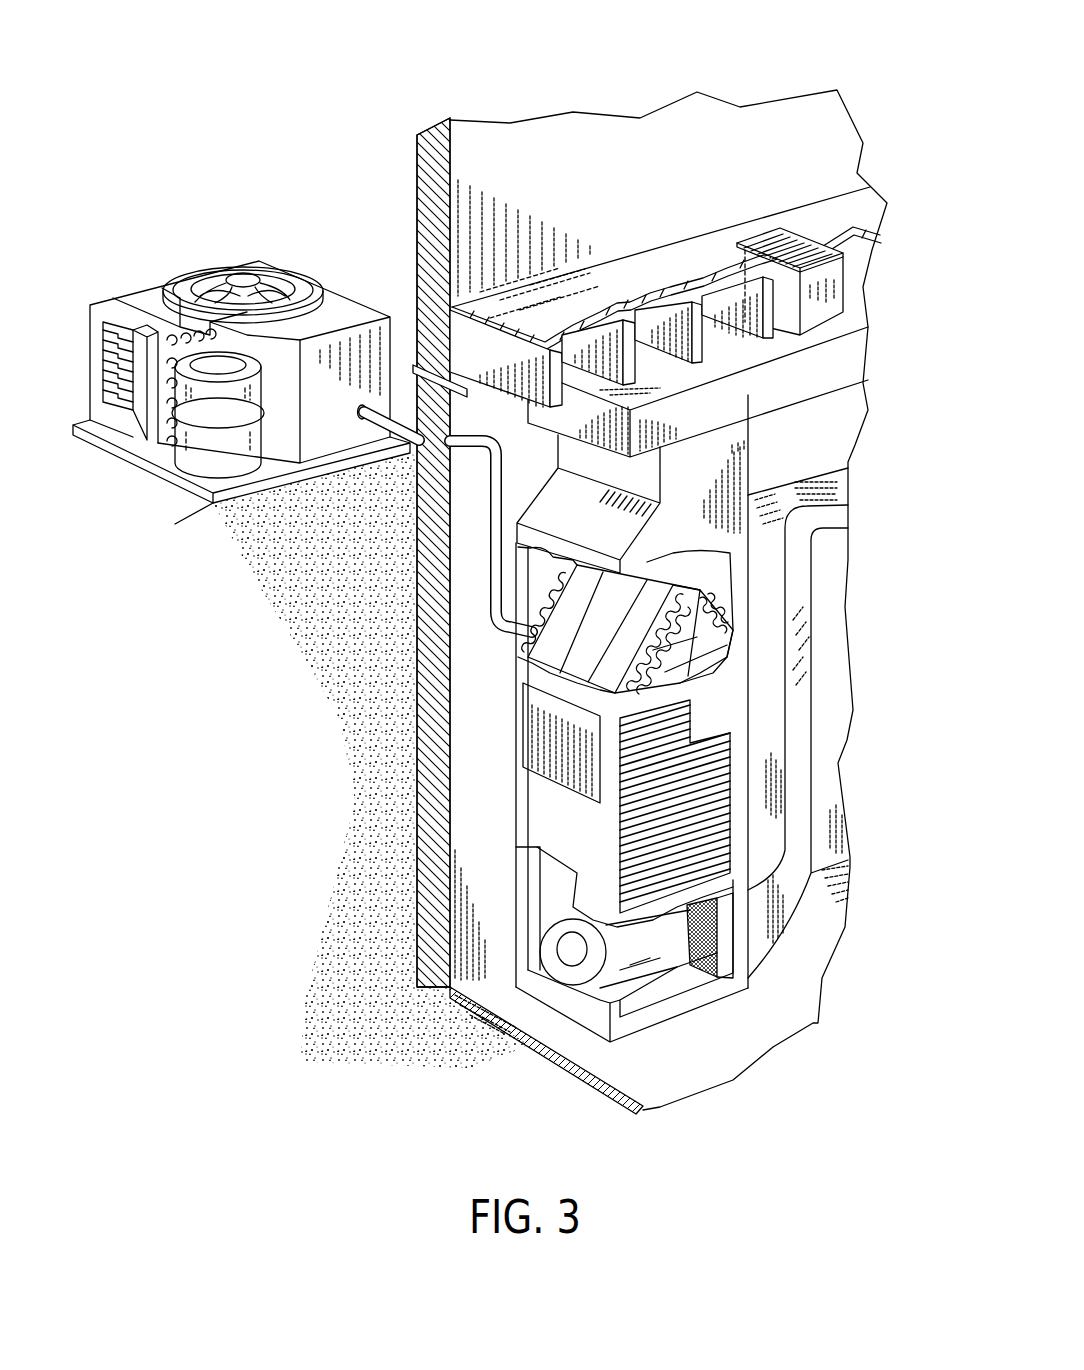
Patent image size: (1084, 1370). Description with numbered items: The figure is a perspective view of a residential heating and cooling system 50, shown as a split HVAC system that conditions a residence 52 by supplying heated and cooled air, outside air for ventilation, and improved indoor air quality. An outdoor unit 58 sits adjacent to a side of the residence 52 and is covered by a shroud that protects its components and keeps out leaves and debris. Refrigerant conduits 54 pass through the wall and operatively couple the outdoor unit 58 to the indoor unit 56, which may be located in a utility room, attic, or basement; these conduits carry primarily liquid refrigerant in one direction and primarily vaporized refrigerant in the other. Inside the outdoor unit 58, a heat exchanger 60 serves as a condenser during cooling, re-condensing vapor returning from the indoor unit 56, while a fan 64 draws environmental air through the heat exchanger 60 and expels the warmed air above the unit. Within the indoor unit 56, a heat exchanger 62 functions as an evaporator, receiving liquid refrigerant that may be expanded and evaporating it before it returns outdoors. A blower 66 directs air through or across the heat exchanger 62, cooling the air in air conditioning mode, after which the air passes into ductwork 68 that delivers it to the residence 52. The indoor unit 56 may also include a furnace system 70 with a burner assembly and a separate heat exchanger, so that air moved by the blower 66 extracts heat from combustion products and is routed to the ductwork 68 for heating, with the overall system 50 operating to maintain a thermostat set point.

The residential heating and cooling system 50 is at (236, 84).
The residence 52 is at (560, 140).
The refrigerant conduits 54 is at (490, 534).
The indoor unit 56 is at (494, 791).
The outdoor unit 58 is at (195, 253).
The heat exchanger 60 is at (172, 337).
The heat exchanger 62 is at (582, 653).
The fan 64 is at (262, 272).
The blower 66 is at (567, 963).
The ductwork 68 is at (815, 328).
The furnace system 70 is at (537, 735).